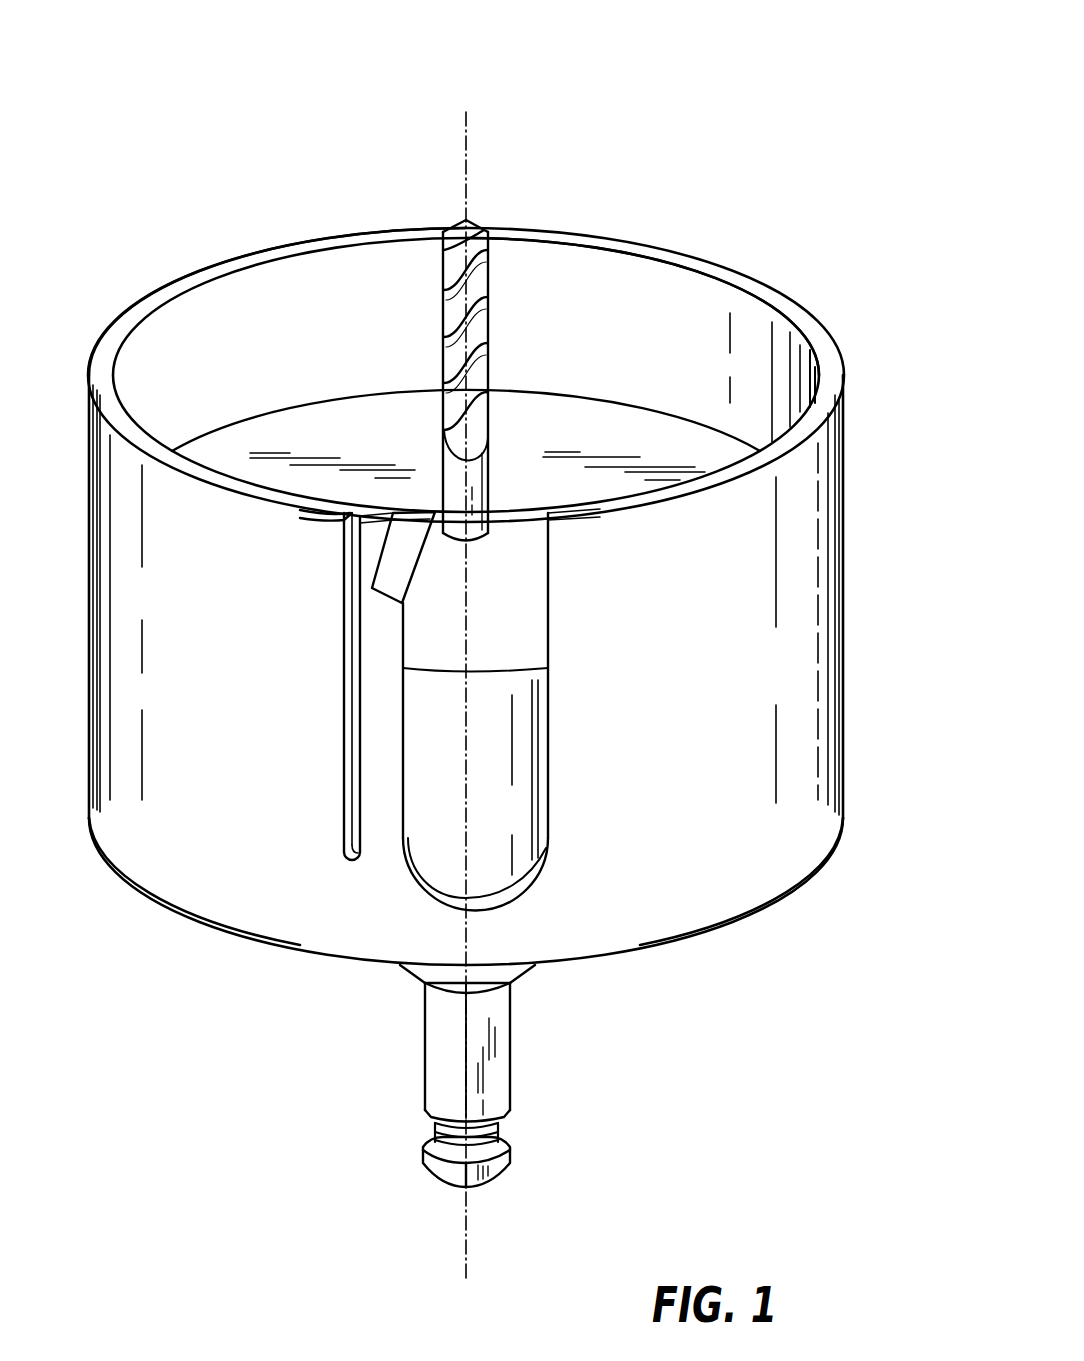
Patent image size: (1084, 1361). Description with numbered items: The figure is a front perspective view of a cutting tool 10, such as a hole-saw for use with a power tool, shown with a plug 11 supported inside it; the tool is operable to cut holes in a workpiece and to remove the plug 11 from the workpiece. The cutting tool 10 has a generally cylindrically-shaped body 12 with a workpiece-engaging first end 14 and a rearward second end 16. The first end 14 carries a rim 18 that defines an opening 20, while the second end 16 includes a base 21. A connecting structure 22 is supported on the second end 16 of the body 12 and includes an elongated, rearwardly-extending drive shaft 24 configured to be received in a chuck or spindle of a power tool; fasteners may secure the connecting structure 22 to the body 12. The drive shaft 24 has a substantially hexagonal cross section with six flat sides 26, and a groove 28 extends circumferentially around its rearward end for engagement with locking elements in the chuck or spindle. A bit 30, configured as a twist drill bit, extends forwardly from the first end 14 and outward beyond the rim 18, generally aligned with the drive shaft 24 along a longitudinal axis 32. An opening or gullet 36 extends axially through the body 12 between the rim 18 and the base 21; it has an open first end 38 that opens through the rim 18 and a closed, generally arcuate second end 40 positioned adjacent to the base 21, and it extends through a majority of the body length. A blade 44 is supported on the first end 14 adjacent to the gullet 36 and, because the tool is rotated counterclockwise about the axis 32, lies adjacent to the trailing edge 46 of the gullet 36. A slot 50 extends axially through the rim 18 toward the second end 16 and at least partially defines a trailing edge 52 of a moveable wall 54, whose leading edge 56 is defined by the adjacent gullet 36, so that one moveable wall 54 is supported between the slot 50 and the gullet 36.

The cutting tool 10 is at (202, 72).
The plug 11 is at (498, 782).
The body 12 is at (845, 572).
The first end 14 is at (740, 270).
The second end 16 is at (195, 923).
The rim 18 is at (233, 262).
The opening 20 is at (153, 368).
The base 21 is at (731, 924).
The connecting structure 22 is at (554, 1047).
The drive shaft 24 is at (443, 1047).
The flat sides 26 is at (500, 1103).
The groove 28 is at (432, 1130).
The bit 30 is at (490, 273).
The longitudinal axis 32 is at (455, 163).
The gullet 36 is at (547, 560).
The first end 38 is at (547, 520).
The second end 40 is at (492, 888).
The blade 44 is at (430, 512).
The trailing edge 46 is at (412, 868).
The slot 50 is at (352, 505).
The trailing edge 52 is at (382, 660).
The moveable wall 54 is at (386, 708).
The leading edge 56 is at (403, 805).